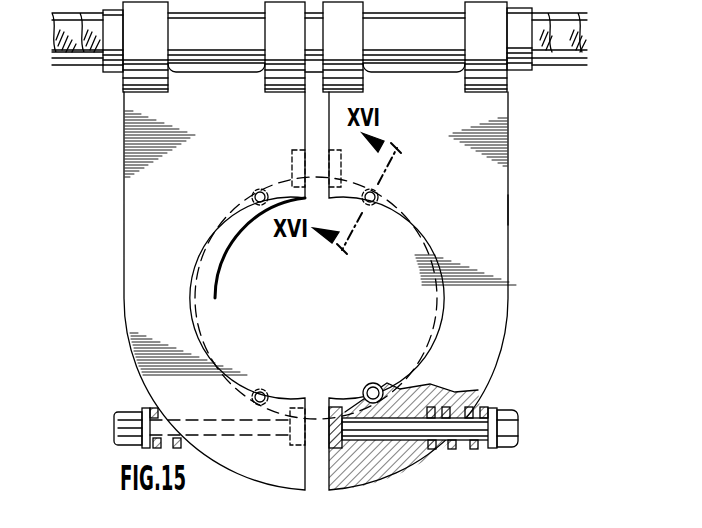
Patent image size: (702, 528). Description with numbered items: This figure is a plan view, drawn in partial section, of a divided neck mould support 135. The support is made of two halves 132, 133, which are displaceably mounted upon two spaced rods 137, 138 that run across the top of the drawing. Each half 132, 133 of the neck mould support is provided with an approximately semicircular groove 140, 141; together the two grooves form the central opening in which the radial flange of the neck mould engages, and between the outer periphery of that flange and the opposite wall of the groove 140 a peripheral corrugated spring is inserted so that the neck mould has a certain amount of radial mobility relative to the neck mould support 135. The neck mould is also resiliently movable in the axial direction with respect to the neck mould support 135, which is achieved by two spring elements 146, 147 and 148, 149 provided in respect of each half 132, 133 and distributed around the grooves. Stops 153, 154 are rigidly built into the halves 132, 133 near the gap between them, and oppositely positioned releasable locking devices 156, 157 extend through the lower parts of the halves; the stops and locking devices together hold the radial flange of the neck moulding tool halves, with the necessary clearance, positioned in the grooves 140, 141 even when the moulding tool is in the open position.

The half of neck mould support 132 is at (508, 180).
The half of neck mould support 133 is at (124, 174).
The neck mould support 135 is at (508, 208).
The rod 137 is at (108, 72).
The rod 138 is at (68, 68).
The semicircular groove 140 is at (390, 382).
The semicircular groove 141 is at (200, 302).
The spring element 146 is at (366, 386).
The spring element 147 is at (374, 203).
The spring element 148 is at (255, 205).
The spring element 149 is at (258, 387).
The stop 153 is at (341, 165).
The stop 154 is at (292, 170).
The releasable locking device 156 is at (510, 441).
The releasable locking device 157 is at (118, 438).